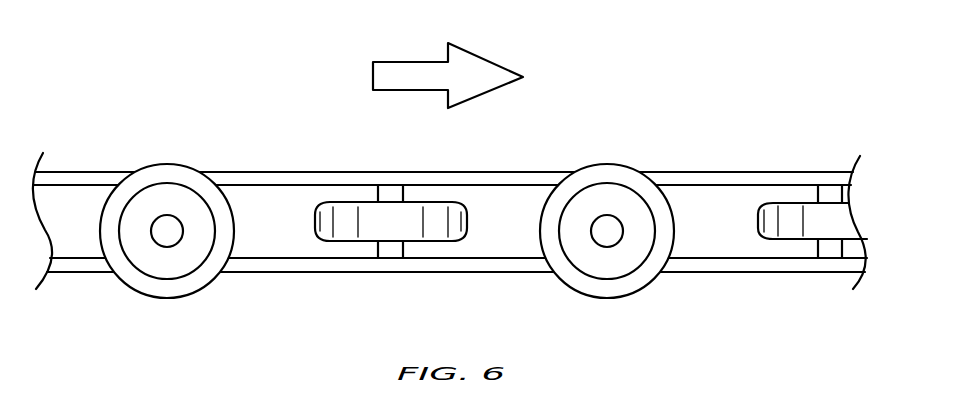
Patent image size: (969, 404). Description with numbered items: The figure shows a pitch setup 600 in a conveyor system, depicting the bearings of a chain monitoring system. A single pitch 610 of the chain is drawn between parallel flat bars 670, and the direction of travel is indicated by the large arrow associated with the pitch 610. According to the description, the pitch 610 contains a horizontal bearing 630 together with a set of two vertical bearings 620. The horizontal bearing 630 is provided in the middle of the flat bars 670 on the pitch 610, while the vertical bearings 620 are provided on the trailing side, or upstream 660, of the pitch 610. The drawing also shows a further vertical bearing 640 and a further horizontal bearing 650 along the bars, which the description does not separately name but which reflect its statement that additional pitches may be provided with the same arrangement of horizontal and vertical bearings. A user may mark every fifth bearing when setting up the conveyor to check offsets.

The pitch setup 600 is at (229, 46).
The pitch 610 is at (418, 91).
The vertical bearing 620 is at (160, 287).
The horizontal bearing 630 is at (367, 233).
The second wheel 640 is at (577, 283).
The second roller end portion 650 is at (834, 154).
The upstream 660 is at (60, 152).
The flat bar 670 is at (665, 171).